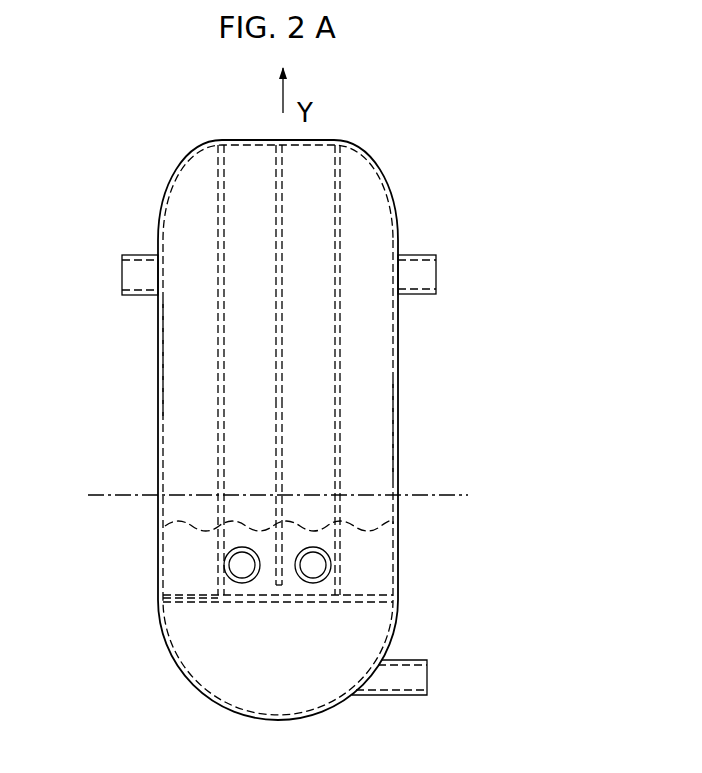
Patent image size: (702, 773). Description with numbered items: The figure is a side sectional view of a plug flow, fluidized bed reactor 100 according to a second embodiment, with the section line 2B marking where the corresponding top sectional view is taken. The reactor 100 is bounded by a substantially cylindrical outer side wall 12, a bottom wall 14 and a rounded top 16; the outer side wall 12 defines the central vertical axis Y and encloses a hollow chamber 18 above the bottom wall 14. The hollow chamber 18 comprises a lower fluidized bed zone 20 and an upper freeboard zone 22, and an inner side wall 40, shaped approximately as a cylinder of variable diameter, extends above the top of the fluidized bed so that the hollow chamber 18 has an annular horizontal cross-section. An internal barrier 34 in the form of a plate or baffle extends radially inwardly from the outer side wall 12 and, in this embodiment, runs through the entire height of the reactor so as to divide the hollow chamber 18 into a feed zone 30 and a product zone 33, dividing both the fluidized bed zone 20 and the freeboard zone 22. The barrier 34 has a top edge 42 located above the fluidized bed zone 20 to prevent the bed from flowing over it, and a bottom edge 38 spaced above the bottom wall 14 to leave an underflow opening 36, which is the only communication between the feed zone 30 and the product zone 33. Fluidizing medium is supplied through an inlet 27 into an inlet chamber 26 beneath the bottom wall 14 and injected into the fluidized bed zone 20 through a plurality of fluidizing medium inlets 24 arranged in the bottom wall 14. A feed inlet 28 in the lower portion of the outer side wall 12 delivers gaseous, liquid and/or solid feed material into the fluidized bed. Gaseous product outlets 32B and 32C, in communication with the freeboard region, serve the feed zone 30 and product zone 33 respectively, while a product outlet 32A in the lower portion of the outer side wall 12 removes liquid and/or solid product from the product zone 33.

The reactor 100 is at (392, 148).
The outer side wall 12 is at (401, 358).
The bottom wall 14 is at (205, 600).
The top 16 is at (200, 152).
The hollow chamber 18 is at (188, 358).
The fluidized bed zone 20 is at (372, 549).
The freeboard zone 22 is at (367, 445).
The fluidizing medium inlets 24 is at (183, 598).
The inlet chamber 26 is at (280, 683).
The inlet 27 is at (435, 660).
The feed inlet 28 is at (322, 570).
The feed zone 30 is at (355, 567).
The product outlet 32A is at (238, 564).
The gaseous product outlet 32B is at (118, 253).
The gaseous product outlet 32C is at (440, 256).
The product zone 33 is at (185, 578).
The internal barrier 34 is at (270, 230).
The opening 36 is at (268, 588).
The bottom edge 38 is at (287, 590).
The inner side wall 40 is at (342, 228).
The top edge 42 is at (274, 142).
The section line 2B is at (93, 494).